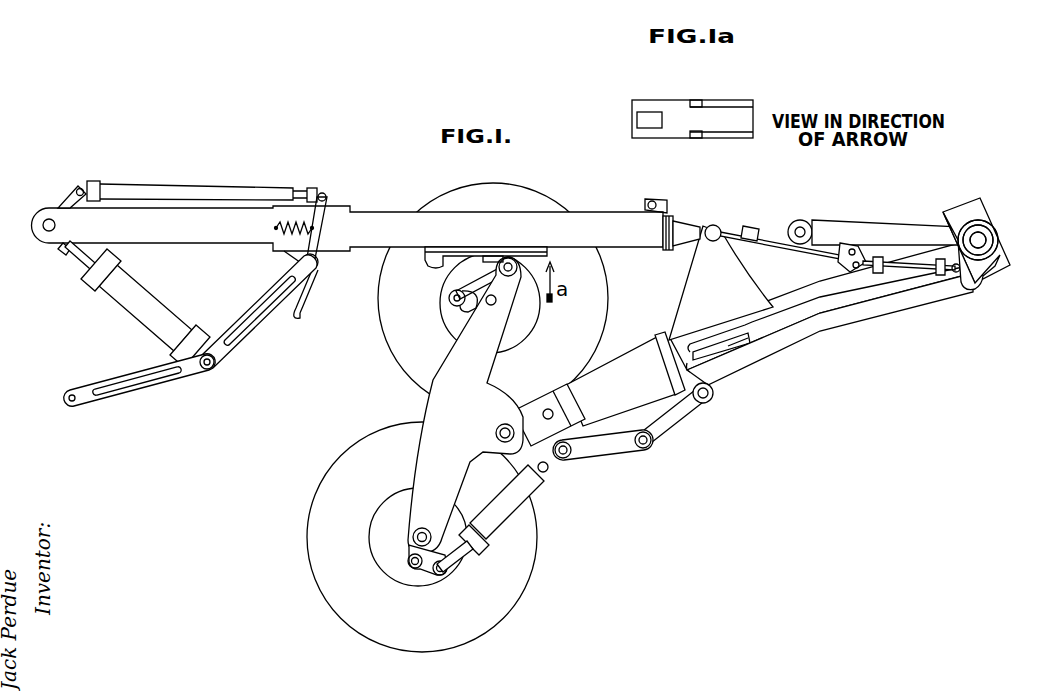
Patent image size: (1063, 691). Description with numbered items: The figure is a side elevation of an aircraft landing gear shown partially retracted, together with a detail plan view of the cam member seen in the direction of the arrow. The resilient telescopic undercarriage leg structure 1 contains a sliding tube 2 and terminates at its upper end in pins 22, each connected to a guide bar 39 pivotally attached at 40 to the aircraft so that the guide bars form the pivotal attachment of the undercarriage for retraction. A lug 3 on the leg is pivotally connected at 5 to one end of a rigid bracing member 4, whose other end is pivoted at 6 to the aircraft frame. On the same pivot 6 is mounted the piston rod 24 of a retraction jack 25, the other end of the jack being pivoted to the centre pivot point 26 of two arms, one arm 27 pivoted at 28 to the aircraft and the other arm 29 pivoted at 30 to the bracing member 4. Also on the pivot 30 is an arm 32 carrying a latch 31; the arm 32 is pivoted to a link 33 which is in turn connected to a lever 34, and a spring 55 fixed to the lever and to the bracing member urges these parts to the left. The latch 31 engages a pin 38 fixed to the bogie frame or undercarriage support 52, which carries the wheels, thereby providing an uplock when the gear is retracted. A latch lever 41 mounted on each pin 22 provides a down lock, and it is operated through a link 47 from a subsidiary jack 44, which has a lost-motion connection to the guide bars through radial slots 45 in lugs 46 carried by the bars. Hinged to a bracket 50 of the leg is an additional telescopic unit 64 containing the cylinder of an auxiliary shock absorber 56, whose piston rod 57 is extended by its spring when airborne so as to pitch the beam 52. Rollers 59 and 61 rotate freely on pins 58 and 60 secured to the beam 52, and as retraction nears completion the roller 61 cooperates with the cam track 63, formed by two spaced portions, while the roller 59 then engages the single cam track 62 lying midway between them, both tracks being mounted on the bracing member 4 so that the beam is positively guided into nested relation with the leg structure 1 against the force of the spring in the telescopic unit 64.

In FIG. 1, the telescopic undercarriage leg structure 1 is at (891, 300).
In FIG. 1, the sliding tube 2 is at (657, 398).
In FIG. 1, the lug 3 is at (688, 294).
In FIG. 1, the rigid bracing member 4 is at (388, 218).
In FIG. 1, the pivot 5 is at (722, 230).
In FIG. 1, the pivot 6 is at (36, 222).
In FIG. 1, the pins 22 is at (995, 232).
In FIG. 1, the piston rod 24 is at (82, 262).
In FIG. 1, the retraction jack 25 is at (134, 304).
In FIG. 1, the centre pivot point 26 is at (210, 370).
In FIG. 1, the arm 27 is at (158, 382).
In FIG. 1, the pivot 28 is at (75, 403).
In FIG. 1, the arm 29 is at (255, 314).
In FIG. 1, the pivot 30 is at (300, 262).
In FIG. 1, the latch 31 is at (295, 320).
In FIG. 1, the arm 32 is at (330, 204).
In FIG. 1, the link 33 is at (204, 190).
In FIG. 1, the lever 34 is at (76, 188).
In FIG. 1, the pin 38 is at (408, 548).
In FIG. 1, the guide bar 39 is at (895, 226).
In FIG. 1, the pivot 40 is at (806, 226).
In FIG. 1, the latch lever 41 is at (975, 292).
In FIG. 1, the subsidiary jack 44 is at (698, 220).
In FIG. 1, the radial slot 45 is at (832, 260).
In FIG. 1, the lug 46 is at (850, 245).
In FIG. 1, the link 47 is at (930, 275).
In FIG. 1, the bracket 50 is at (548, 472).
In FIG. 1, the undercarriage support 52 is at (445, 410).
In FIG. 1, the spring 55 is at (273, 222).
In FIG. 1, the auxiliary shock absorber 56 is at (462, 545).
In FIG. 1, the piston rod 57 is at (452, 570).
In FIG. 1, the pin 58 is at (448, 296).
In FIG. 1, the roller 59 is at (457, 310).
In FIG. 1, the pin 60 is at (497, 266).
In FIG. 1, the roller 61 is at (513, 258).
In FIG. 1, the cam track 62 is at (431, 252).
In FIG. 1A, the cam track 62 is at (648, 112).
In FIG. 1, the cam track 63 is at (491, 256).
In FIG. 1A, the cam track 63 is at (712, 132).
In FIG. 1, the telescopic unit 64 is at (507, 510).